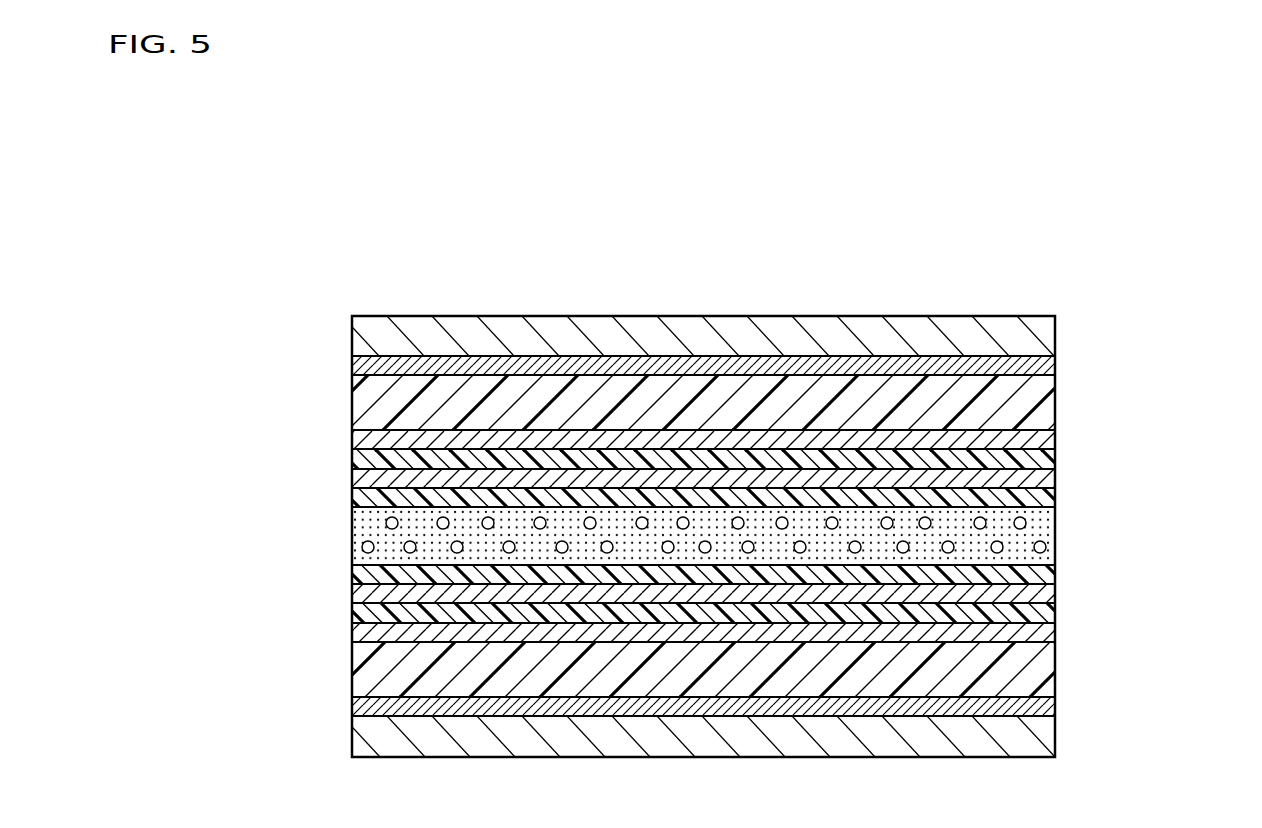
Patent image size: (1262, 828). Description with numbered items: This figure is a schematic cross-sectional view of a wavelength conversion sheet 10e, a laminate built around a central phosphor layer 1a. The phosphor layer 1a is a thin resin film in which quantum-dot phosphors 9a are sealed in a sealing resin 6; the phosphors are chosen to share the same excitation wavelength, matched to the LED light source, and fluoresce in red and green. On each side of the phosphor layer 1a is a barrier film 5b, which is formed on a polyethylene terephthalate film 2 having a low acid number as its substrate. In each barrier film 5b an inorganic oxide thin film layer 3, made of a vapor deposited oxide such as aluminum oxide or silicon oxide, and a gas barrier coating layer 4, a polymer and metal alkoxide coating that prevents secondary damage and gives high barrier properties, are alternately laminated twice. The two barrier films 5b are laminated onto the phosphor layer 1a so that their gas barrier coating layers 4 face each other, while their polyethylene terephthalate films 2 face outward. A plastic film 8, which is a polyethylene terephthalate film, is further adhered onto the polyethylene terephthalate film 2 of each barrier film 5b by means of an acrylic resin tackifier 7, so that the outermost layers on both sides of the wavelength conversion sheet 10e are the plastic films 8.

The wavelength conversion sheet 10e is at (374, 244).
The plastic film 8 is at (1048, 340).
The acrylic resin tackifier 7 is at (1048, 366).
The polyethylene terephthalate film 2 is at (1048, 392).
The inorganic oxide thin film layer 3 is at (1048, 440).
The gas barrier coating layer 4 is at (1048, 460).
The barrier film 5b is at (1143, 365).
The phosphor layer 1a is at (1170, 512).
The phosphor 9a is at (1026, 523).
The sealing resin 6 is at (1048, 540).